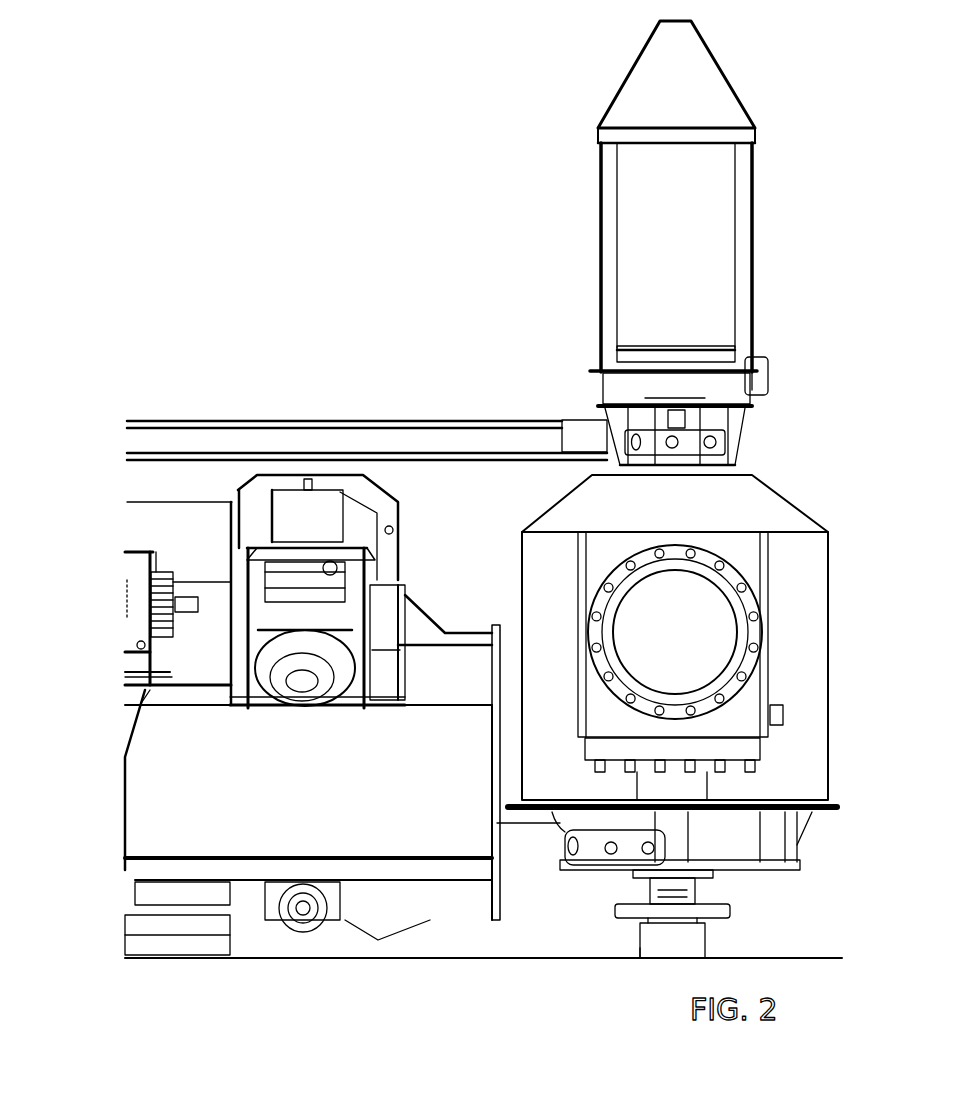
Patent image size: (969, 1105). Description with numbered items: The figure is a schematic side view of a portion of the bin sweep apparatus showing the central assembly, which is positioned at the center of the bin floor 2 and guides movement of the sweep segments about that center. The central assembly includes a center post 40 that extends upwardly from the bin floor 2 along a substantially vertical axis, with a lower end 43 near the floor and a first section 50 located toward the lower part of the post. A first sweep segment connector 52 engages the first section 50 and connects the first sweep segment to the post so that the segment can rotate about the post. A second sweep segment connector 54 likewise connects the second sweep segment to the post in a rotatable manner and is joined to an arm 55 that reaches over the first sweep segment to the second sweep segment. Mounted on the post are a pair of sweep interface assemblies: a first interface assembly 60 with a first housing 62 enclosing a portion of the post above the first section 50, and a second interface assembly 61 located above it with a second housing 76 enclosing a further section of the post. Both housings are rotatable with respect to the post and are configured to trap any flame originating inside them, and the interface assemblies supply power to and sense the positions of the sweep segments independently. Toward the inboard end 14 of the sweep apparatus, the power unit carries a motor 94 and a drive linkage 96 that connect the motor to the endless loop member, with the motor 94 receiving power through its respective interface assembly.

The bin floor 2 is at (418, 958).
The inboard end 14 is at (463, 600).
The center post 40 is at (708, 948).
The lower end 43 is at (618, 948).
The first section 50 is at (698, 889).
The first sweep segment connector 52 is at (598, 856).
The second sweep segment connector 54 is at (578, 433).
The arm 55 is at (213, 440).
The first interface assembly 60 is at (824, 830).
The second interface assembly 61 is at (770, 338).
The first housing 62 is at (773, 578).
The second housing 76 is at (738, 285).
The motor 94 is at (195, 540).
The drive linkage 96 is at (310, 525).